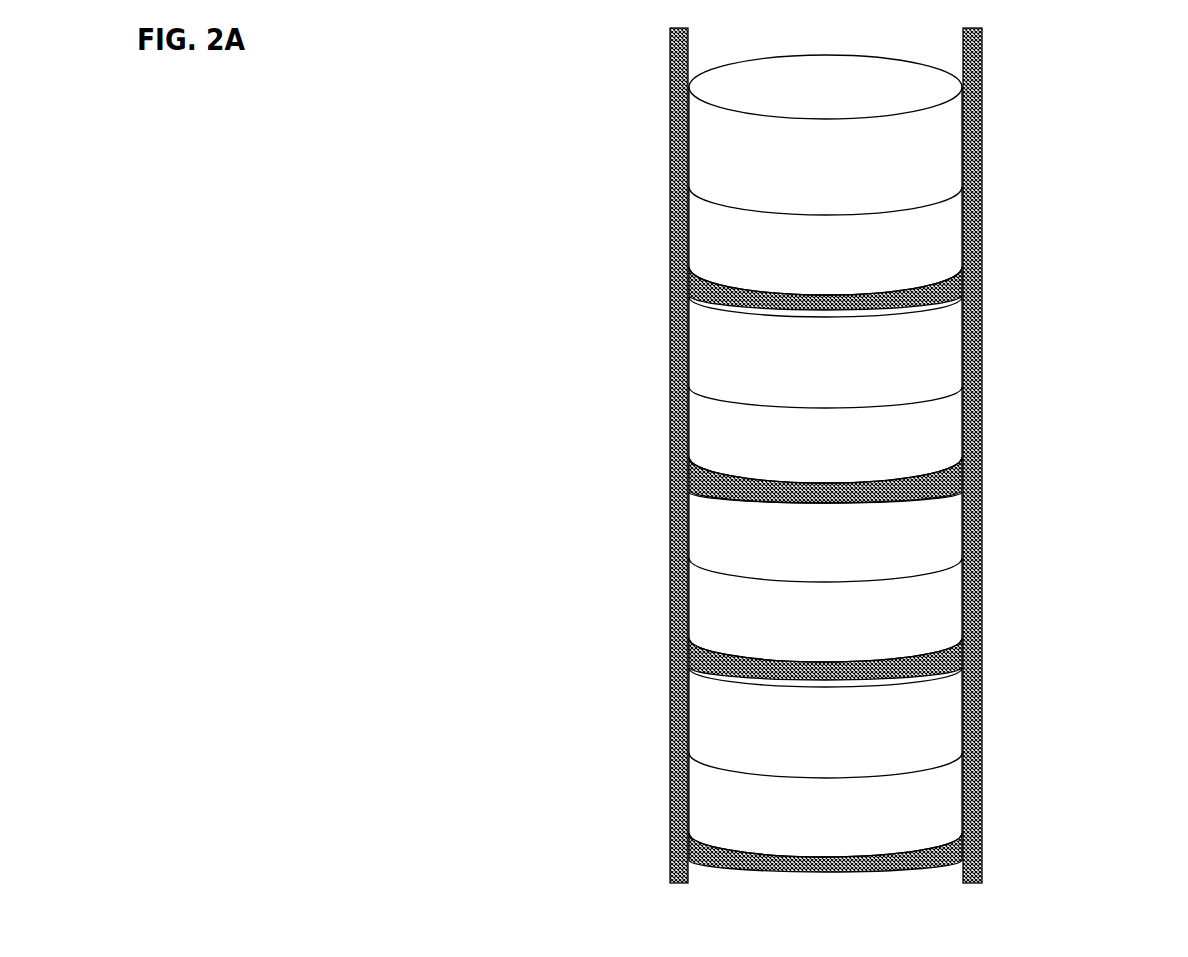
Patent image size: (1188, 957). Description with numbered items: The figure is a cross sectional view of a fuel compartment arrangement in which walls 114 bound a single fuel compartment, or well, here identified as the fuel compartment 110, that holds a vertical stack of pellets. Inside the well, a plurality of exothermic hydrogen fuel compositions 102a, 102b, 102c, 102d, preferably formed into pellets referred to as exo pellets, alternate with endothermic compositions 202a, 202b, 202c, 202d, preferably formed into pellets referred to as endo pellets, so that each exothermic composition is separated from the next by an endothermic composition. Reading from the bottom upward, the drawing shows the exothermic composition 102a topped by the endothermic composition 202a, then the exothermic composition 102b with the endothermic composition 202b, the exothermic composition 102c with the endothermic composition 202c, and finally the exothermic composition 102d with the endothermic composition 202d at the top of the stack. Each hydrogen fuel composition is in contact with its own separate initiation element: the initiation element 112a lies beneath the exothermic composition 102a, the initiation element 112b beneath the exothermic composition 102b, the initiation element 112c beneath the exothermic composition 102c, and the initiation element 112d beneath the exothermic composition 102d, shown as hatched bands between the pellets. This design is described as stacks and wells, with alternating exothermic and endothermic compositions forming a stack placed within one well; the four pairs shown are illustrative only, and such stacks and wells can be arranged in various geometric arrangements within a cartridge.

The housing tube 110 is at (1015, 138).
The walls 114 is at (670, 108).
The endothermic composition 202a is at (825, 723).
The endothermic composition 202b is at (825, 537).
The endothermic composition 202c is at (825, 352).
The endothermic composition 202d is at (825, 135).
The exothermic hydrogen fuel composition 102a is at (825, 805).
The exothermic hydrogen fuel composition 102b is at (825, 610).
The exothermic hydrogen fuel composition 102c is at (825, 435).
The exothermic hydrogen fuel composition 102d is at (825, 241).
The initiation element 112a is at (680, 848).
The initiation element 112b is at (678, 650).
The initiation element 112c is at (672, 476).
The initiation element 112d is at (688, 280).